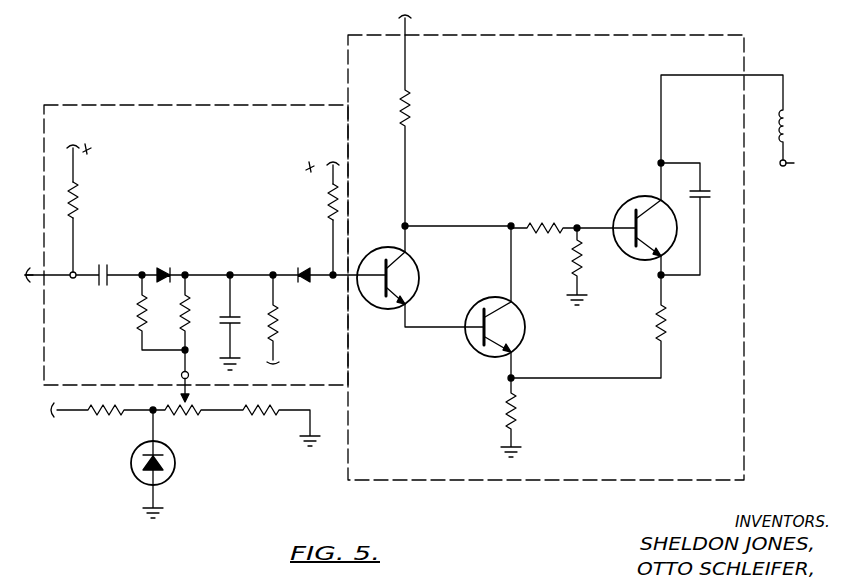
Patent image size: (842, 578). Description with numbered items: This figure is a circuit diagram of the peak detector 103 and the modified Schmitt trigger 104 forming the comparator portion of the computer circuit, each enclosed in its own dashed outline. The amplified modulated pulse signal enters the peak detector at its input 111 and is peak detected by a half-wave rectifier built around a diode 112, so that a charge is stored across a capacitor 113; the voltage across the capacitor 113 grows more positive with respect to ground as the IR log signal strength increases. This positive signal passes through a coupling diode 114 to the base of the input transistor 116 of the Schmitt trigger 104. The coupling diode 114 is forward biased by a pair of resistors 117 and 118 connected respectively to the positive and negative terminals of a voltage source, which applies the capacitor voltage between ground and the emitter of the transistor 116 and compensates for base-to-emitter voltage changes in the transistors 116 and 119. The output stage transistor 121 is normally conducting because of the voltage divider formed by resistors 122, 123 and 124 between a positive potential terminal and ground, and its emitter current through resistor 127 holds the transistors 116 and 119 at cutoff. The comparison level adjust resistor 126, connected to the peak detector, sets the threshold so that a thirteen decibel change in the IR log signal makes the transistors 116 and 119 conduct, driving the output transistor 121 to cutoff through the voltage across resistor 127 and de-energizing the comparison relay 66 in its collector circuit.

The comparison relay 66 is at (794, 126).
The peak detector 103 is at (228, 88).
The modified Schmitt trigger 104 is at (573, 62).
The input terminal 111 is at (33, 273).
The diode 112 is at (163, 270).
The capacitor 113 is at (238, 314).
The coupling diode 114 is at (306, 270).
The input transistor 116 is at (383, 248).
The resistor 117 is at (329, 208).
The resistor 118 is at (279, 334).
The transistor 119 is at (480, 356).
The output stage transistor 121 is at (651, 198).
The resistor 122 is at (410, 120).
The resistor 123 is at (569, 206).
The resistor 124 is at (580, 274).
The comparison level adjust resistor 126 is at (203, 414).
The resistor 127 is at (520, 426).